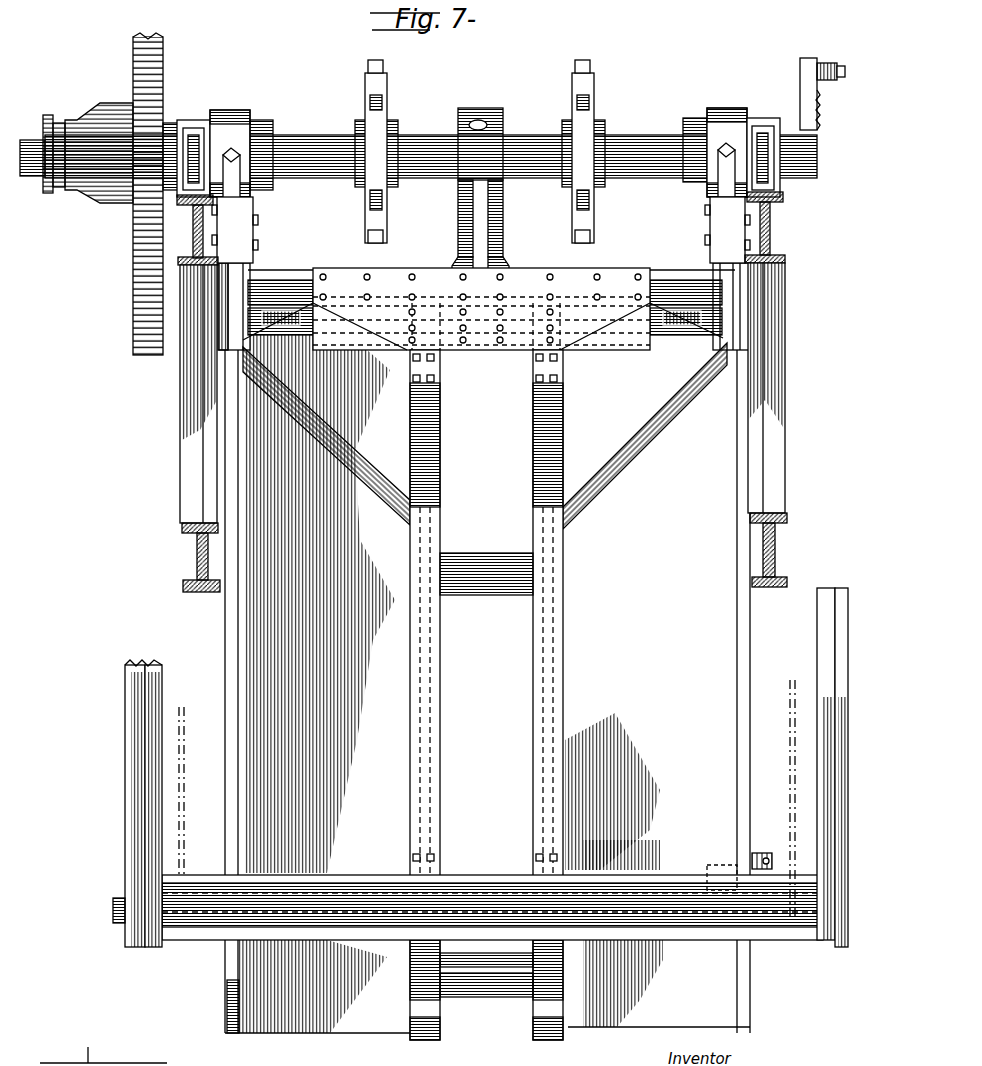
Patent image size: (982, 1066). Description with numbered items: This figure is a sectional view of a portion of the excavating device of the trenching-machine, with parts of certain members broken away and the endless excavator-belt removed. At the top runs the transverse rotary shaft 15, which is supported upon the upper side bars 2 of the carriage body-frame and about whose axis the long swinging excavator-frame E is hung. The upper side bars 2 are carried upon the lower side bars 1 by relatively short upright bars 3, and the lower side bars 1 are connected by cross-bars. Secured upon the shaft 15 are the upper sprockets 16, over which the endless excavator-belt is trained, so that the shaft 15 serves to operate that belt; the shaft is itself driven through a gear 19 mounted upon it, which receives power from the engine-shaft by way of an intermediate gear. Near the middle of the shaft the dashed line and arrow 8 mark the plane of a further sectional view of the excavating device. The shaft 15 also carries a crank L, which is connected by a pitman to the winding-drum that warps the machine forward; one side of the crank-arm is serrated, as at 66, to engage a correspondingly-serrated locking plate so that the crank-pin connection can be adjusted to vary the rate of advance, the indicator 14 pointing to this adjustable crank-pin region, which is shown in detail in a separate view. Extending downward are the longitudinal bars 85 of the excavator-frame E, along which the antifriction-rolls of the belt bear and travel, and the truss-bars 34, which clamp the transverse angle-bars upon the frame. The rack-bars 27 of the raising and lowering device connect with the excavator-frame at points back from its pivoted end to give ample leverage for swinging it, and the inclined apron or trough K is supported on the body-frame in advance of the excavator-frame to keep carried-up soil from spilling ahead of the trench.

The lower side bars 1 is at (198, 563).
The upper side bars 2 is at (200, 227).
The upright bars 3 is at (182, 411).
The central hub 8 is at (505, 102).
The bracket nut 14 is at (790, 73).
The rotary shaft 15 is at (650, 137).
The upper sprockets 16 is at (396, 78).
The gear 19 is at (133, 73).
The rack-bars 27 is at (131, 752).
The truss-bars 34 is at (540, 757).
The serrated side of crank-arm 66 is at (831, 124).
The longitudinal bars 85 is at (448, 685).
The excavator-frame E is at (580, 645).
The inclined apron or trough K is at (681, 674).
The crank L is at (827, 103).